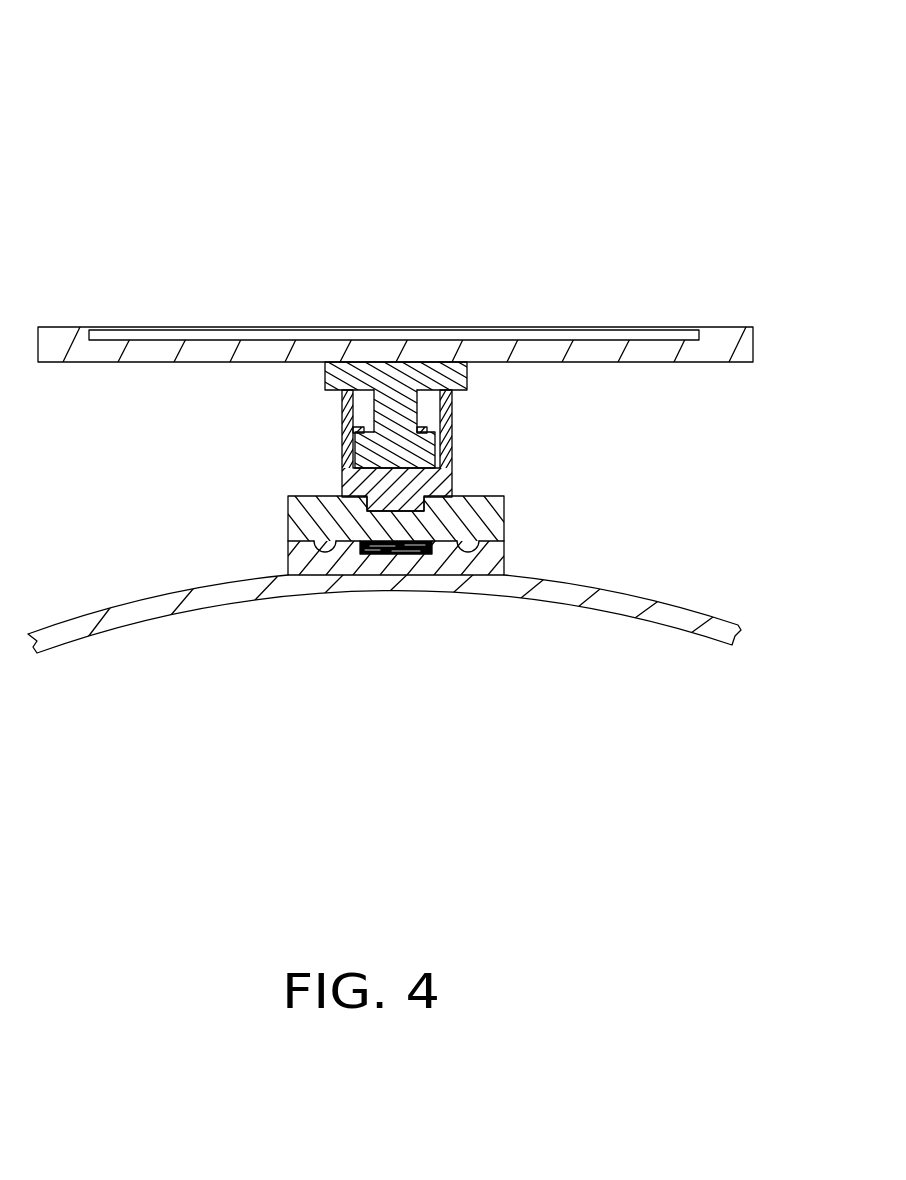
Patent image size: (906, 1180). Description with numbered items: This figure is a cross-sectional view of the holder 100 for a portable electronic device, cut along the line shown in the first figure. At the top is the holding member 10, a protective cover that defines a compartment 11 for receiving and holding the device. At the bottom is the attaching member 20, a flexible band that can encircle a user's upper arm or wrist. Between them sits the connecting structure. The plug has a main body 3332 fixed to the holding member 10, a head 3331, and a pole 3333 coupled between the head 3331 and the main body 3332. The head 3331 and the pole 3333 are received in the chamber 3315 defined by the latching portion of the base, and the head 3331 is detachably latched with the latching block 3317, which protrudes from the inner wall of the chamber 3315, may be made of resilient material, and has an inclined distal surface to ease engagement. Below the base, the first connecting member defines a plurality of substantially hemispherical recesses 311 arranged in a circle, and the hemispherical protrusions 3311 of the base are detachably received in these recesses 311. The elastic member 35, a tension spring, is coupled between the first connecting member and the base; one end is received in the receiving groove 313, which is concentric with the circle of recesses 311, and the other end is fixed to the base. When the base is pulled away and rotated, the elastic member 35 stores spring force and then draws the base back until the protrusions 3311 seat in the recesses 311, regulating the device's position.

The holder 100 is at (459, 65).
The holding member 10 is at (727, 337).
The compartment 11 is at (642, 335).
The attaching member 20 is at (147, 605).
The elastic member 35 is at (433, 542).
The recess 311 is at (478, 542).
The receiving groove 313 is at (433, 543).
The protrusion 3311 is at (326, 552).
The chamber 3315 is at (364, 407).
The latching block 3317 is at (360, 427).
The head 3331 is at (420, 452).
The main body 3332 is at (460, 375).
The pole 3333 is at (400, 405).